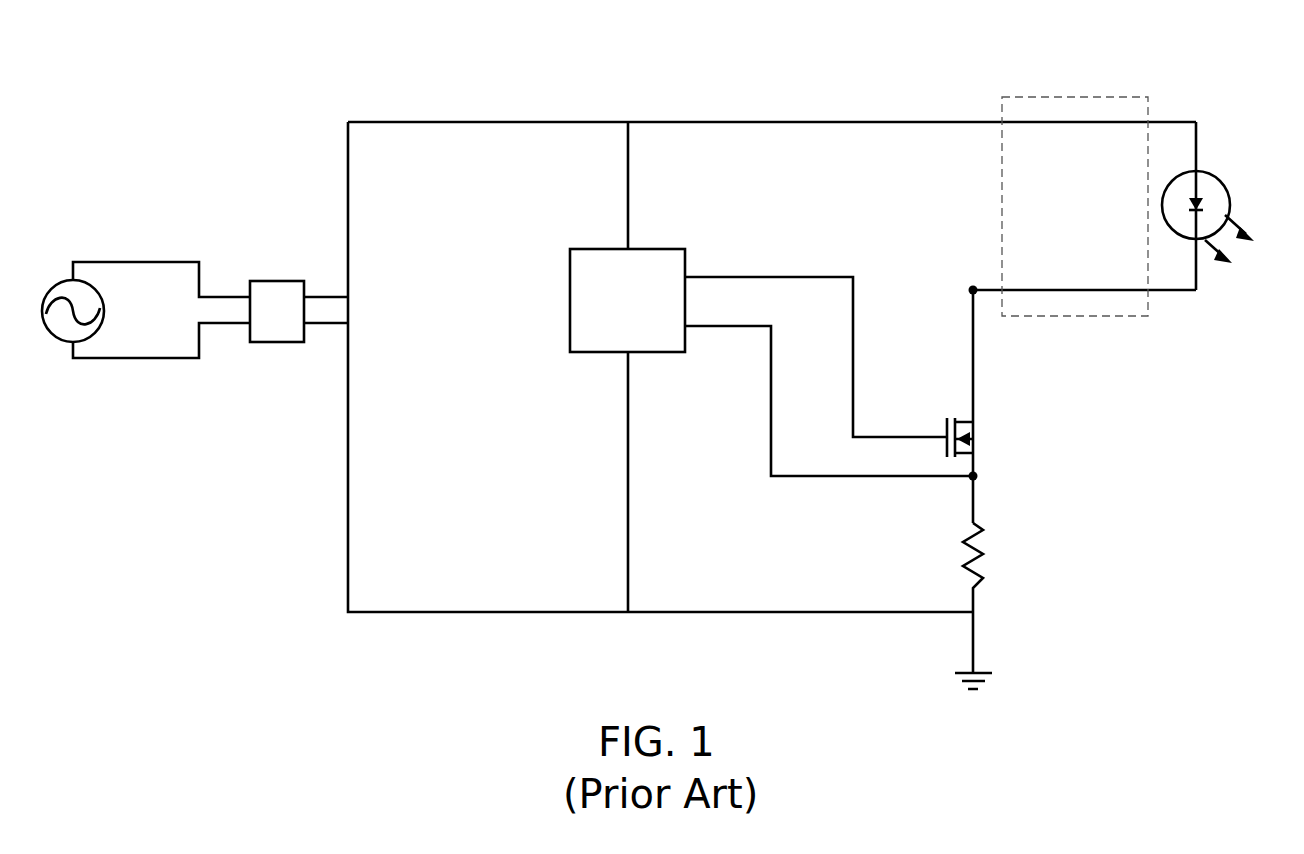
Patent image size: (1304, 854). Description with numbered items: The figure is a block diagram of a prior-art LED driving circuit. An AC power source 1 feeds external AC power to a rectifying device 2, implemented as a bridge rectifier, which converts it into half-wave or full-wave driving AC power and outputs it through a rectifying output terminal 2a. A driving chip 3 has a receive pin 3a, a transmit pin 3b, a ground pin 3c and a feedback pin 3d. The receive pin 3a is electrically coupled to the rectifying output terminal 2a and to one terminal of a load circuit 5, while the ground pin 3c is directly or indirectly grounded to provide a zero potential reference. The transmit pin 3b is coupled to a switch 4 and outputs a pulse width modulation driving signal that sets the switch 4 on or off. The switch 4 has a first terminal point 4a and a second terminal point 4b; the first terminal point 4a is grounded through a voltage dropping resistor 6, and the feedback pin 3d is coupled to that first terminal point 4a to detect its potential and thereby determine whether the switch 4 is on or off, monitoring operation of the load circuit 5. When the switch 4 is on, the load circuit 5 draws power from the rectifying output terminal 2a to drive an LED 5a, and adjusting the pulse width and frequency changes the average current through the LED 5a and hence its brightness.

The AC power source 1 is at (43, 300).
The rectifying device 2 is at (277, 280).
The rectifying output terminal 2a is at (348, 121).
The driving chip 3 is at (578, 249).
The receive pin 3a is at (630, 214).
The transmit pin 3b is at (765, 276).
The ground pin 3c is at (630, 494).
The feedback pin 3d is at (726, 328).
The switch 4 is at (982, 450).
The first terminal point 4a is at (971, 479).
The second terminal point 4b is at (970, 286).
The load circuit 5 is at (1078, 95).
The LED 5a is at (1232, 205).
The voltage dropping resistor 6 is at (997, 573).